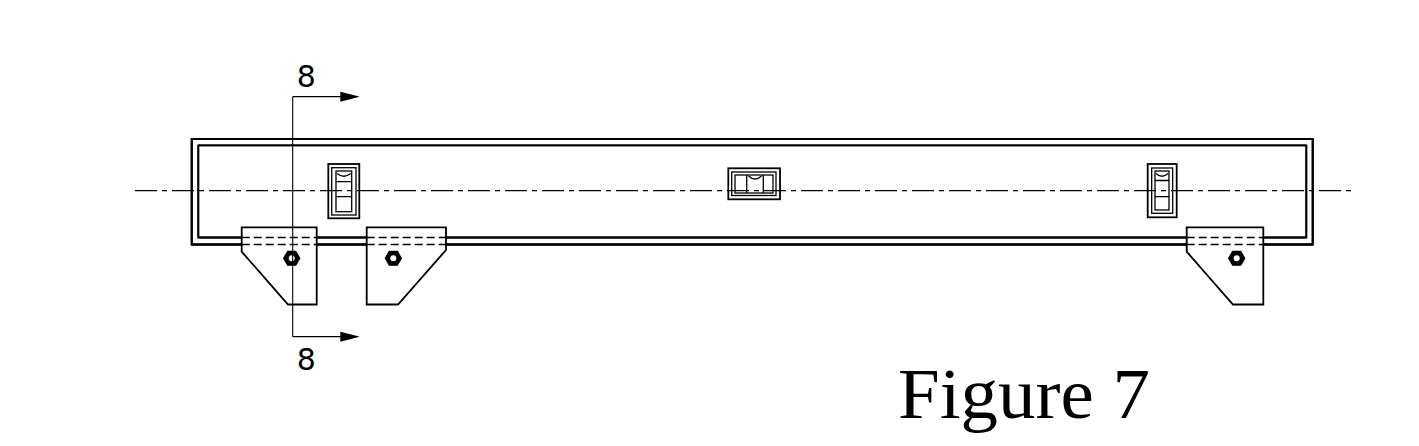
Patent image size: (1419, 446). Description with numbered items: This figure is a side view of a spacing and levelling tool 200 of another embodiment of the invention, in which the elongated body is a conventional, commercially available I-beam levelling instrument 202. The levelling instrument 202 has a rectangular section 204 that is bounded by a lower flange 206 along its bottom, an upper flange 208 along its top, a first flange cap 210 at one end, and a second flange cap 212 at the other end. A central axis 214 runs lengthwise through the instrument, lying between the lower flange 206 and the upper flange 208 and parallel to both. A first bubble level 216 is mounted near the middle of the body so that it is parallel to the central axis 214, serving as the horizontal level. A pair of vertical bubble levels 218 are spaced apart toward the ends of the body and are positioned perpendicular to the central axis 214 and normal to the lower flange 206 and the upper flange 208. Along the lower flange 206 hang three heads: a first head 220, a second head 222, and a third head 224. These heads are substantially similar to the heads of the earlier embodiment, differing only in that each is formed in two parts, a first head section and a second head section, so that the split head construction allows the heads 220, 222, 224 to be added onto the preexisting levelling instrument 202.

The spacing and levelling tool 200 is at (1005, 107).
The levelling instrument 202 is at (757, 136).
The rectangular section 204 is at (1210, 157).
The lower flange 206 is at (615, 241).
The upper flange 208 is at (605, 143).
The first flange cap 210 is at (1313, 165).
The second flange cap 212 is at (190, 218).
The central axis 214 is at (172, 191).
The first bubble level 216 is at (770, 182).
The vertical bubble levels 218 is at (347, 180).
The first head 220 is at (272, 273).
The second head 222 is at (403, 280).
The third head 224 is at (1222, 280).